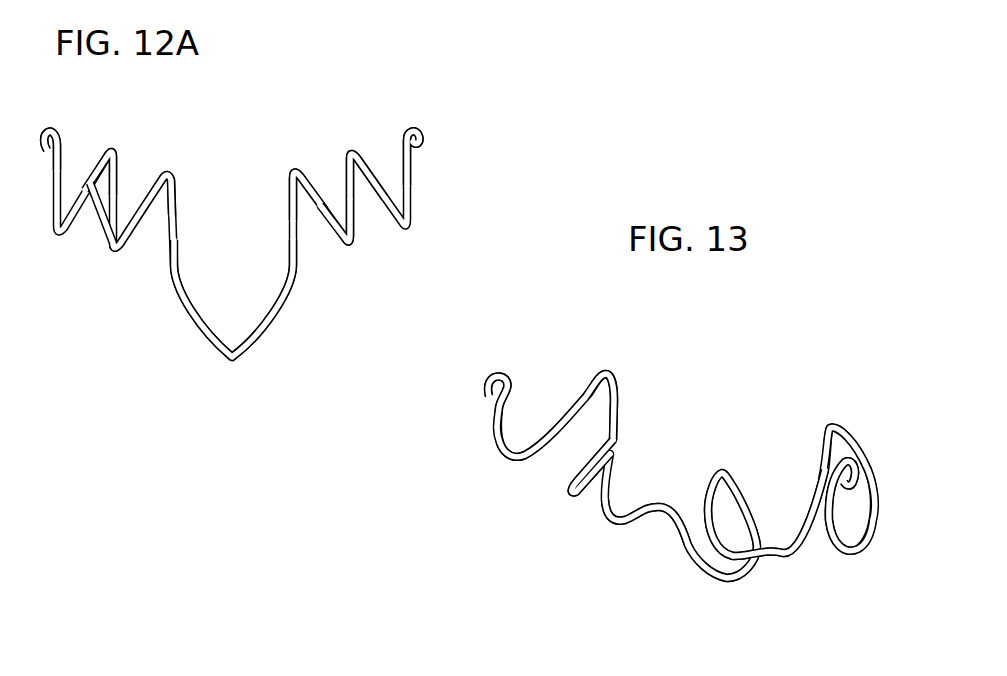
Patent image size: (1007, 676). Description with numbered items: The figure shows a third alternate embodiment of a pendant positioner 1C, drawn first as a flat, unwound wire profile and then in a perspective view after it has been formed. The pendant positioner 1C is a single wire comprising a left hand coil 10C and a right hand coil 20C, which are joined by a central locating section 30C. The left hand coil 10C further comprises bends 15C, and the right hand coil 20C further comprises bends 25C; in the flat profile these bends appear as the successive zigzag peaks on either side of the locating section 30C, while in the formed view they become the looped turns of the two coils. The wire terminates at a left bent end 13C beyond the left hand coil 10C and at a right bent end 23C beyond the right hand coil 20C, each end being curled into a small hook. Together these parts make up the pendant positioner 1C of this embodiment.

In FIG. 12A, the pendant positioner 1C is at (177, 170).
In FIG. 13, the pendant positioner 1C is at (610, 520).
In FIG. 12A, the left hand coil 10C is at (344, 247).
In FIG. 13, the left hand coil 10C is at (793, 550).
In FIG. 12A, the left bent end 13C is at (418, 143).
In FIG. 13, the left bent end 13C is at (850, 467).
In FIG. 12A, the bends 15C is at (350, 150).
In FIG. 13, the bends 15C is at (827, 423).
In FIG. 12A, the right hand coil 20C is at (112, 248).
In FIG. 13, the right hand coil 20C is at (527, 457).
In FIG. 12A, the right bent end 23C is at (50, 133).
In FIG. 13, the right bent end 23C is at (487, 383).
In FIG. 12A, the bends 25C is at (167, 172).
In FIG. 13, the bends 25C is at (605, 375).
In FIG. 12A, the locating section 30C is at (195, 327).
In FIG. 13, the locating section 30C is at (690, 545).